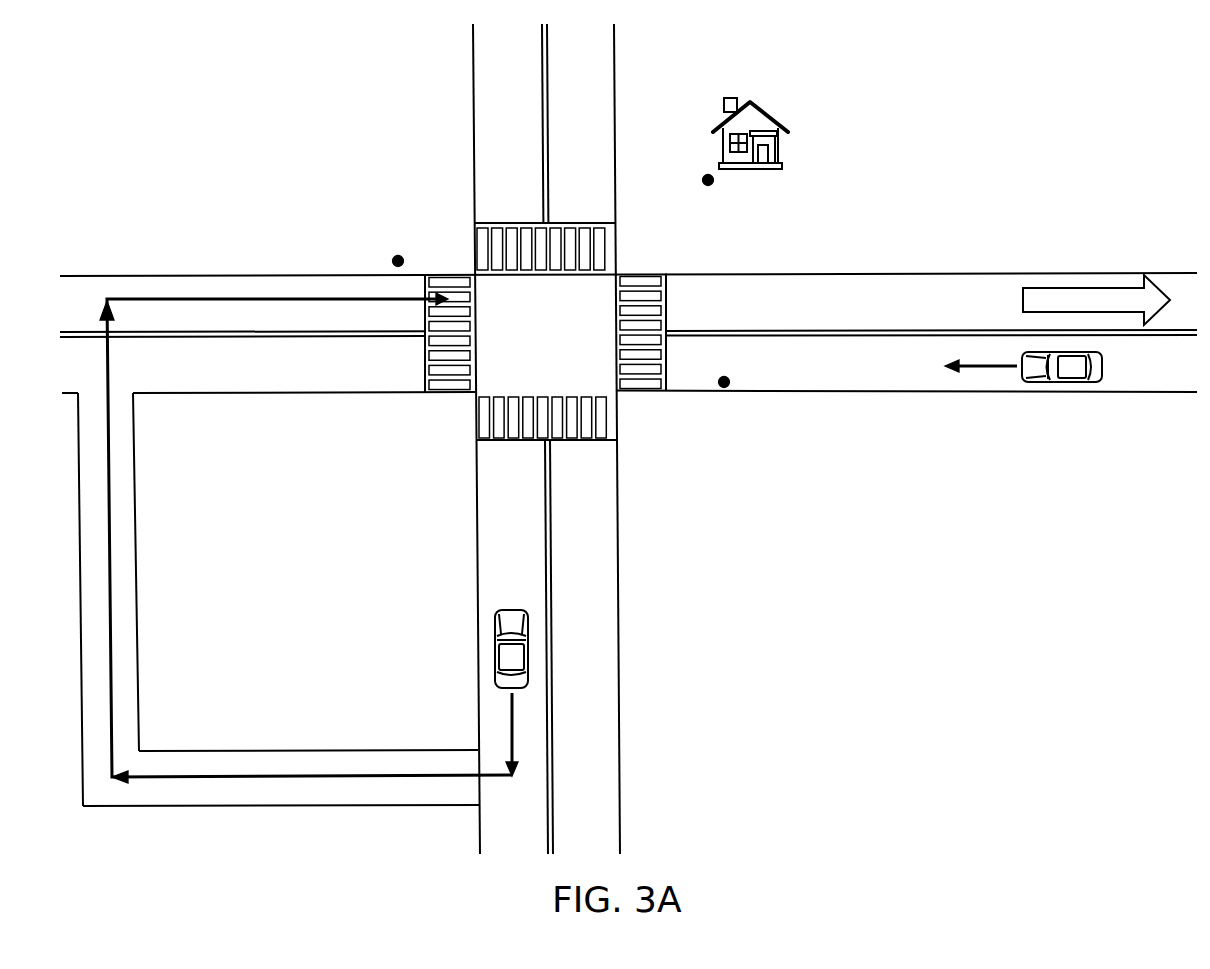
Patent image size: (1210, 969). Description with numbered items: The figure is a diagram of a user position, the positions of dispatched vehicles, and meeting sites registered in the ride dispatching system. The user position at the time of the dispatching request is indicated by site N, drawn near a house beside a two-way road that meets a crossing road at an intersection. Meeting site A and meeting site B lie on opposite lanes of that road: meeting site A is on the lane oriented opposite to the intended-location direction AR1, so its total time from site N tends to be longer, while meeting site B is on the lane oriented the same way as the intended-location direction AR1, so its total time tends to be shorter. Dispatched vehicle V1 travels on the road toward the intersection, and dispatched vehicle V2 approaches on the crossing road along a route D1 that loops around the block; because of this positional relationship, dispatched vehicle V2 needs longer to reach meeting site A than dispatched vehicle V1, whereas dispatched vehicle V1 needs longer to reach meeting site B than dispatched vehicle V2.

The meeting site A is at (724, 388).
The meeting site B is at (398, 256).
The site N is at (708, 181).
The dispatched vehicle V1 is at (1071, 382).
The dispatched vehicle V2 is at (497, 640).
The travel route / detour path D1 is at (207, 762).
The intended-location direction AR1 is at (1089, 291).